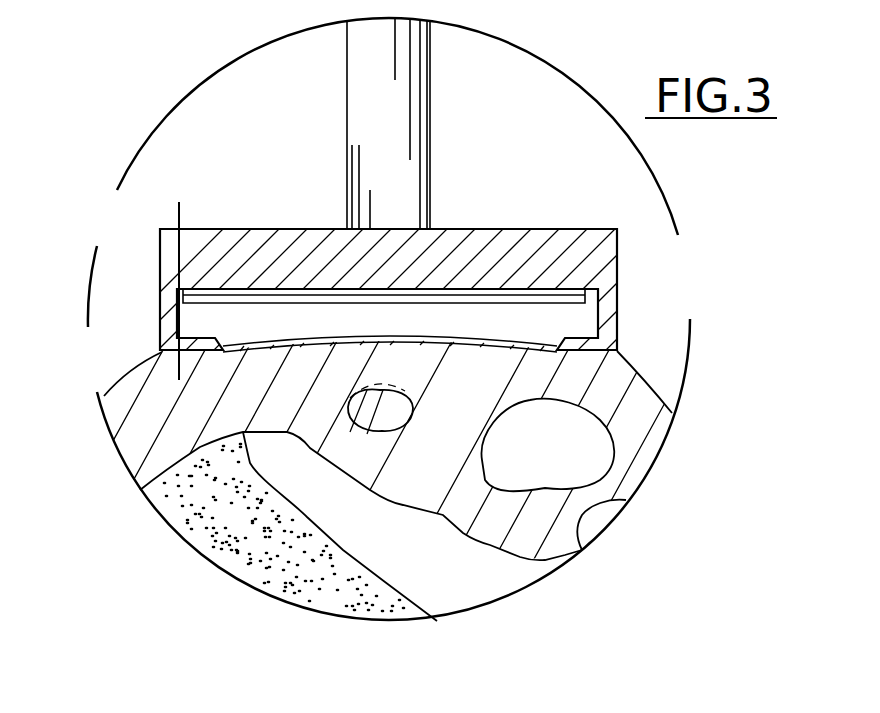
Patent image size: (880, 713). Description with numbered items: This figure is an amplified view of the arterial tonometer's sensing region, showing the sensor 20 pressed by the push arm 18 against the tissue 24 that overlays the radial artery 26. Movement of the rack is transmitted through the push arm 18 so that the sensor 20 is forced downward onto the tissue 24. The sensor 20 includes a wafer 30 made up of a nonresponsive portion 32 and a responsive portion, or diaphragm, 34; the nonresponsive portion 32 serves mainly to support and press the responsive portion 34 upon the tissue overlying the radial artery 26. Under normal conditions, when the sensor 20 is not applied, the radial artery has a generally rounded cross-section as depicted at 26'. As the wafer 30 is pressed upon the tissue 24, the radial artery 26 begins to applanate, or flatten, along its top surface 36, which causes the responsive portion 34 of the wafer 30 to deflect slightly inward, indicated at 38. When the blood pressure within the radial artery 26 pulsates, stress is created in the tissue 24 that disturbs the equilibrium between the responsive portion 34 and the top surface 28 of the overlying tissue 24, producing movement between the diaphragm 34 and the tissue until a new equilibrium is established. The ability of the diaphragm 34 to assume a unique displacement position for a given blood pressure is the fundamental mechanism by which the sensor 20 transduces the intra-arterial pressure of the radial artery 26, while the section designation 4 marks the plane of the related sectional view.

The push arm 18 is at (347, 72).
The nonresponsive portion 32 is at (203, 336).
The inward deflection 38 is at (421, 327).
The responsive portion (diaphragm) 34 is at (386, 330).
The tissue 24 is at (383, 363).
The top surface of overlying tissue 28 is at (370, 355).
The top surface of radial artery 36 is at (385, 403).
The radial artery 26 is at (361, 526).
The radial artery in rounded cross-section 26' is at (397, 438).
The wafer 30 is at (502, 378).
The sensor 20 is at (657, 294).
The section line 4- 4 is at (179, 213).